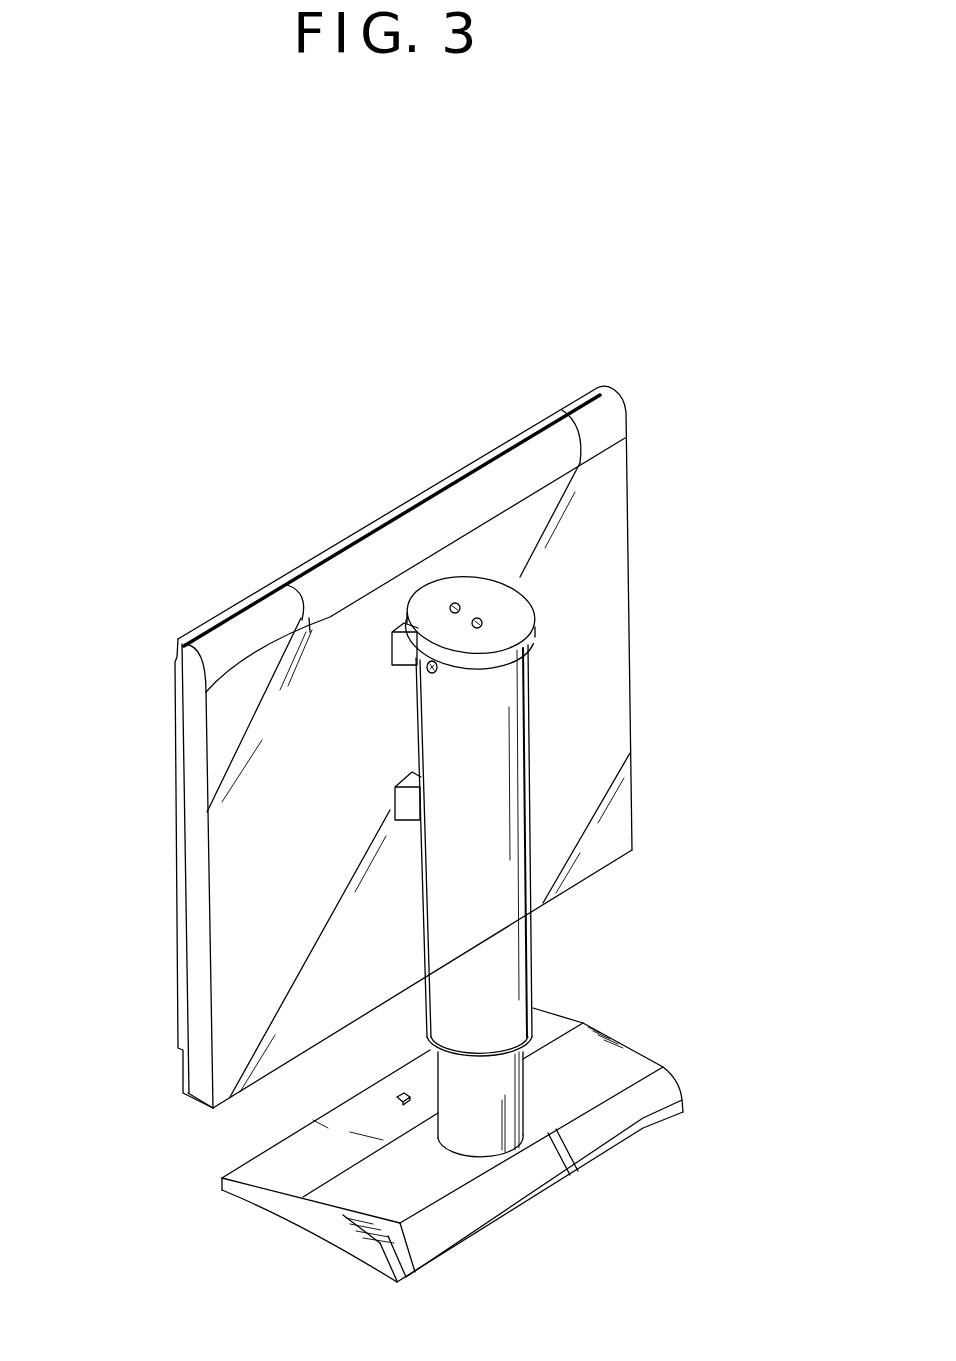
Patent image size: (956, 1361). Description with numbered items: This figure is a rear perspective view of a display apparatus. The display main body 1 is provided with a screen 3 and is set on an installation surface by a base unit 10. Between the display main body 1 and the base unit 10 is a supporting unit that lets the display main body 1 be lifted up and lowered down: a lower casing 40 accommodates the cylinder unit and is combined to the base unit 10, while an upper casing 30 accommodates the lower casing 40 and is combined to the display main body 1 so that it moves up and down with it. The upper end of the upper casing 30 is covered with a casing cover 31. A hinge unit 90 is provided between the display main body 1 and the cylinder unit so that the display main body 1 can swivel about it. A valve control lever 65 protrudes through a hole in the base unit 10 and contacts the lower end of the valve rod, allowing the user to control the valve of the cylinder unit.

The display main body 1 is at (190, 926).
The screen 3 is at (178, 826).
The base unit 10 is at (298, 1238).
The upper casing 30 is at (532, 962).
The casing cover 31 is at (433, 587).
The lower casing 40 is at (513, 1147).
The valve control lever 65 is at (393, 1100).
The hinge unit 90 is at (410, 717).